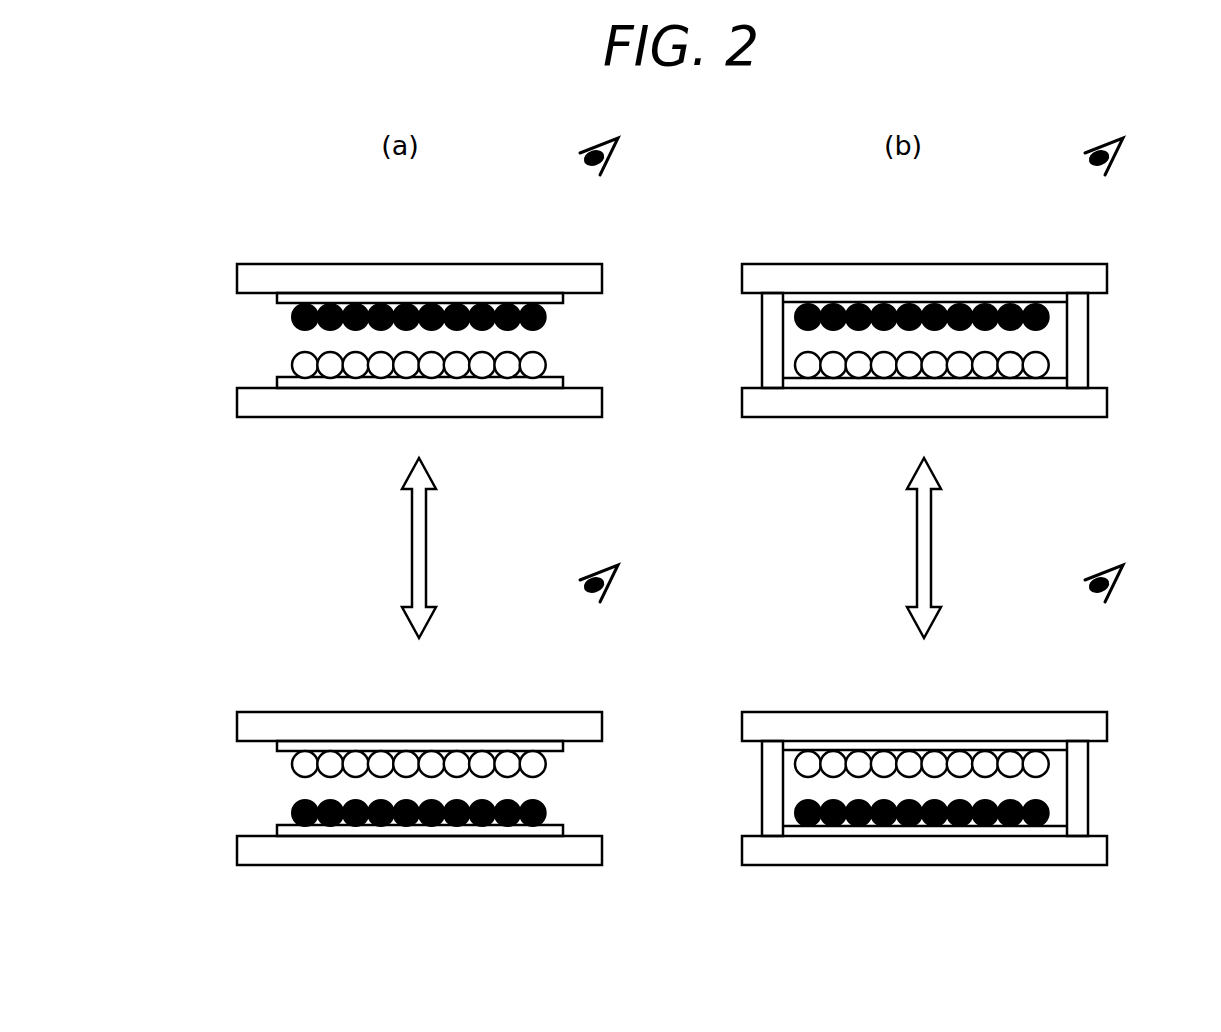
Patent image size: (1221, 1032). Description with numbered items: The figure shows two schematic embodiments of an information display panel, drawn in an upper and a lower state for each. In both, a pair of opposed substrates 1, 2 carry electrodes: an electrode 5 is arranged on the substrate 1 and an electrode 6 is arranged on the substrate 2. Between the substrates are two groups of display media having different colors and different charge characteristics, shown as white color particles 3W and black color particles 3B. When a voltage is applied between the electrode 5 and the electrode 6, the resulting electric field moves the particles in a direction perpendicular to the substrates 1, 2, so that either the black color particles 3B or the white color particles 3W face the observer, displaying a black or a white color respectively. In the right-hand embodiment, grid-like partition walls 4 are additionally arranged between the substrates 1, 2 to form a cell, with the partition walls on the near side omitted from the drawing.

The substrate 1 is at (343, 407).
The substrate 2 is at (417, 278).
The black color particles 3B is at (622, 288).
The white color particles 3W is at (622, 352).
The partition walls 4 is at (1082, 338).
The electrode 5 is at (510, 381).
The electrode 6 is at (509, 300).